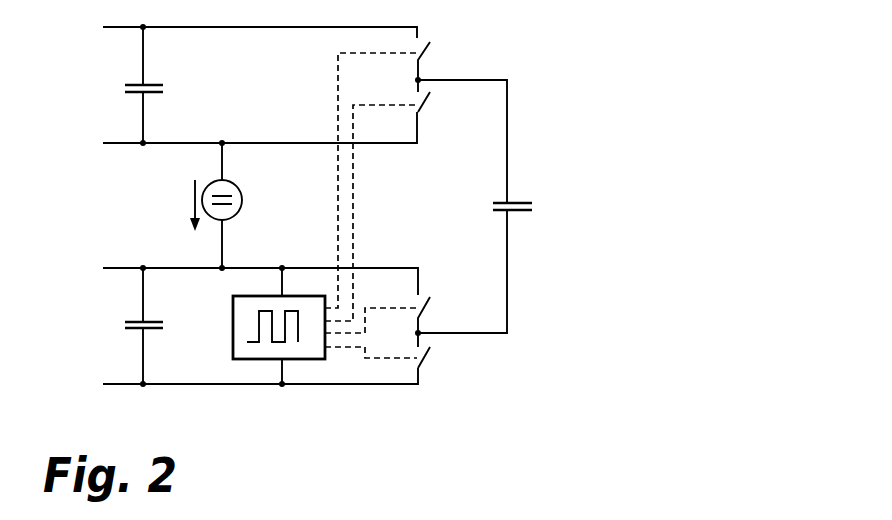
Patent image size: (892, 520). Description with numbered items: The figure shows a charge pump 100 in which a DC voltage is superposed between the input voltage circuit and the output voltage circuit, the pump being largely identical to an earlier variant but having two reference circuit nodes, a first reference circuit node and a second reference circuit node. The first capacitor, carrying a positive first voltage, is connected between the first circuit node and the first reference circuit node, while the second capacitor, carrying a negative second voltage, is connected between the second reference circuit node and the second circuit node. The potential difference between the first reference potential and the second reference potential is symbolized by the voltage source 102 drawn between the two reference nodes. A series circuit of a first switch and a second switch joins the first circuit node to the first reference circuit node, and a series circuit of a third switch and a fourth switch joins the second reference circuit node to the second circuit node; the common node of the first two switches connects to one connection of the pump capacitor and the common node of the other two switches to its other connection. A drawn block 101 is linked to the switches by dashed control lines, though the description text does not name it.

The charge pump 100 is at (635, 322).
The clock generator / control unit 101 is at (233, 320).
The voltage source 102 is at (244, 190).